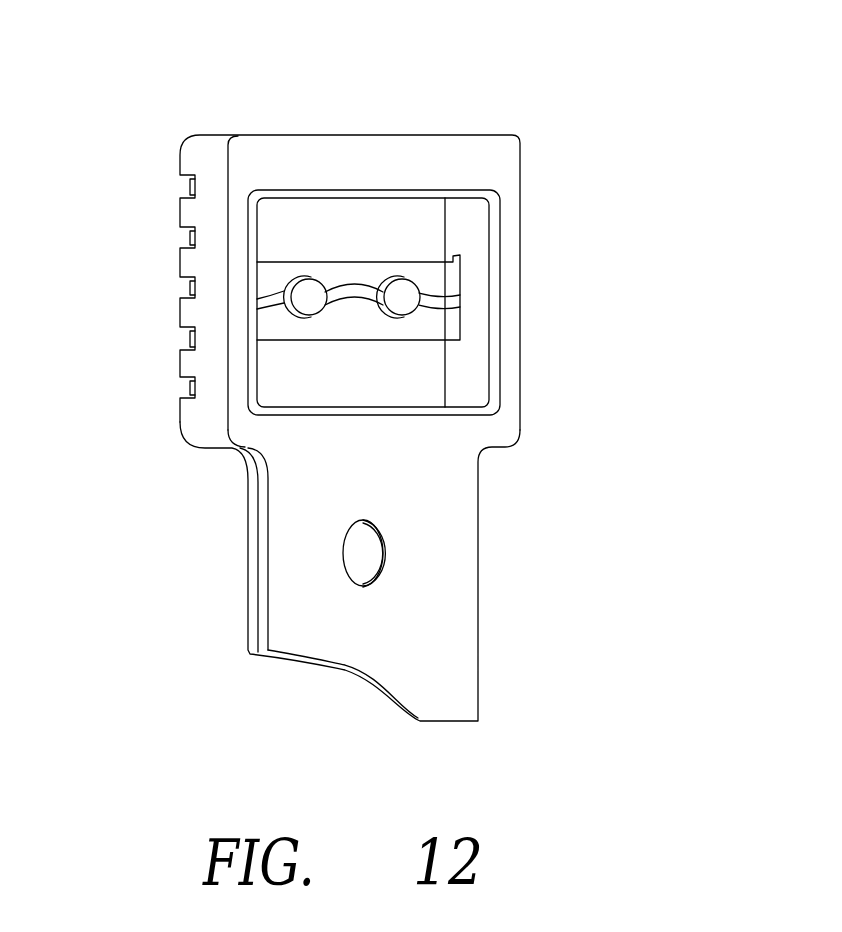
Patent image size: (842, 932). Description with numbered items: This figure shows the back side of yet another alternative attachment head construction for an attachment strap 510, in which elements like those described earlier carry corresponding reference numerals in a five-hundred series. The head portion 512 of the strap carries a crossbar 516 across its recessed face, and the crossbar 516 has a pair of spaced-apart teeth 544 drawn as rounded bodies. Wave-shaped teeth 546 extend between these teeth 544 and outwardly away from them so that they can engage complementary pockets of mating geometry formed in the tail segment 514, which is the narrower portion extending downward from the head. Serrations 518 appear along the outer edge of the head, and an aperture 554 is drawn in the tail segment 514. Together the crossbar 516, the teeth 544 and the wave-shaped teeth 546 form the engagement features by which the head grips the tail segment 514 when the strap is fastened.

The attachment strap 510 is at (423, 100).
The base portion 512 is at (477, 133).
The tail segment 514 is at (478, 630).
The crossbar 516 is at (455, 412).
The serrations 518 is at (193, 211).
The teeth 544 is at (403, 287).
The cable segments 546 is at (270, 313).
The aperture 554 is at (387, 553).